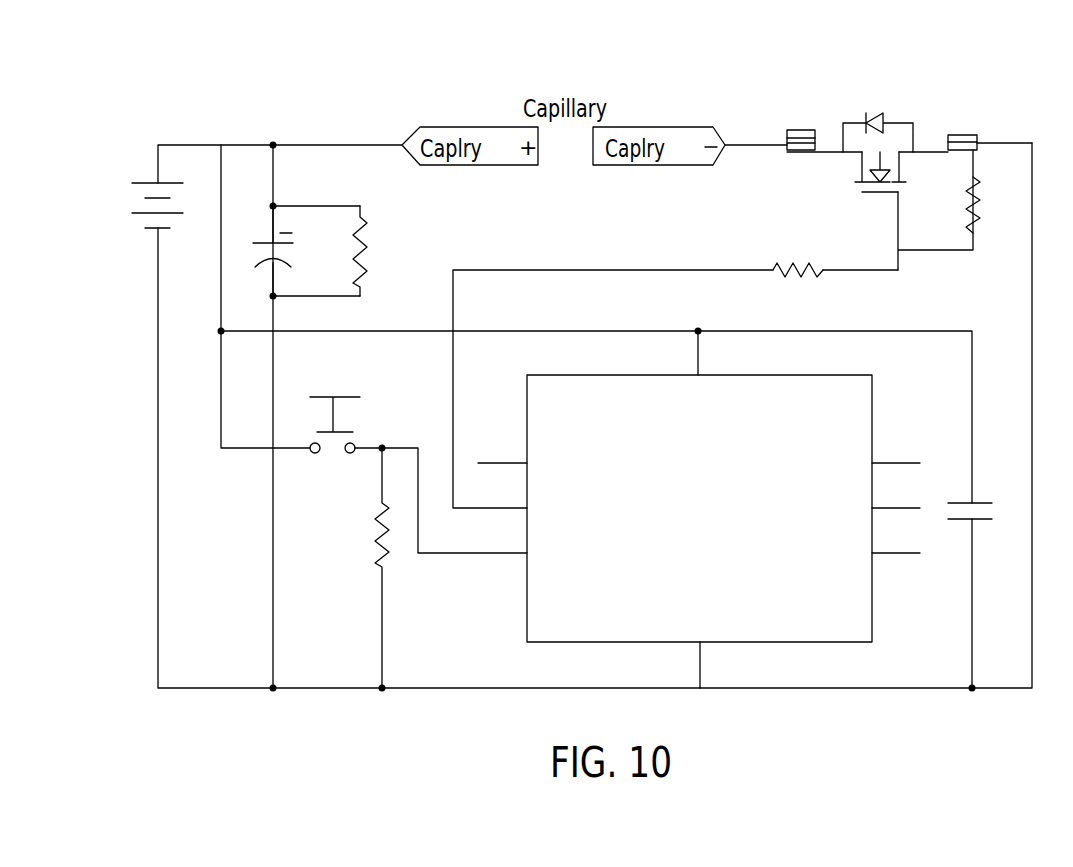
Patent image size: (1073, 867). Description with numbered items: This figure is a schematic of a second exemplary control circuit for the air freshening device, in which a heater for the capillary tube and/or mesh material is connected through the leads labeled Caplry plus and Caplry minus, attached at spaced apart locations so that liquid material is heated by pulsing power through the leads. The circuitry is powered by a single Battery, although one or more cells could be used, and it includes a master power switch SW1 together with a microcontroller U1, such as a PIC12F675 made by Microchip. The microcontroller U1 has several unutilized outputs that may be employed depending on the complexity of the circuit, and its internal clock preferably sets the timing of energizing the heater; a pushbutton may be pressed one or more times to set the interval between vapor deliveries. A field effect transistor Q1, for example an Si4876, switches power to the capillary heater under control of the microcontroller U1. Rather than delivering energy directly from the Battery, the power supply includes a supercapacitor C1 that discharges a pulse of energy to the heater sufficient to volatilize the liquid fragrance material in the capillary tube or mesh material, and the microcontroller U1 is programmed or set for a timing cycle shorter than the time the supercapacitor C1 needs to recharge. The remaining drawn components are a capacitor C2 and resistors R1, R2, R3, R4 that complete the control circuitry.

The battery Battery is at (122, 211).
The supercapacitor C1 is at (306, 251).
The resistor R1 is at (386, 251).
The resistor R2 is at (798, 266).
The resistor R3 is at (992, 203).
The resistor R4 is at (364, 568).
The capacitor C2 is at (983, 513).
The field effect transistor Q1 is at (882, 157).
The microcontroller U1 is at (697, 510).
The master power switch SW1 is at (335, 442).